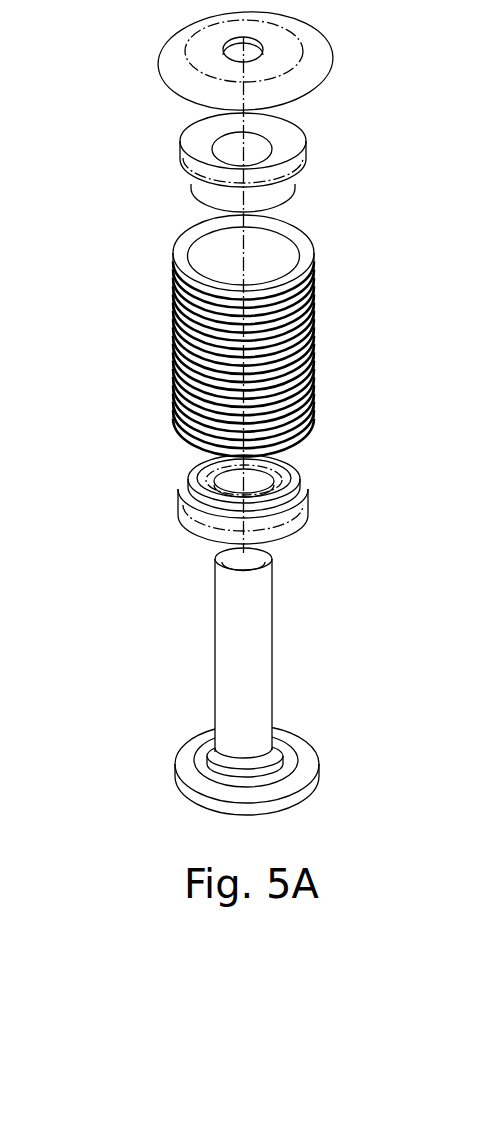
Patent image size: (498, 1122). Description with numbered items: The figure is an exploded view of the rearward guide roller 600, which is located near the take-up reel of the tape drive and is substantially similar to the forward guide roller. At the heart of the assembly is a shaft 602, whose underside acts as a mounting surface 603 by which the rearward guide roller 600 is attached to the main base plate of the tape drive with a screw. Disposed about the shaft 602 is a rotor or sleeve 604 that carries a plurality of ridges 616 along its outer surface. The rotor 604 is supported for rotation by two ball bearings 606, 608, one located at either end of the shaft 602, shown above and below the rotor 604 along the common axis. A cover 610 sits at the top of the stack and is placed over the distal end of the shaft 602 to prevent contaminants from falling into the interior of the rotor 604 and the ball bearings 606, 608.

The rearward guide roller 600 is at (136, 361).
The shaft 602 is at (262, 648).
The mounting surface 603 is at (186, 769).
The rotor 604 is at (308, 249).
The ball bearing 606 is at (300, 145).
The ball bearing 608 is at (303, 500).
The cover 610 is at (320, 50).
The ridges 616 is at (315, 317).